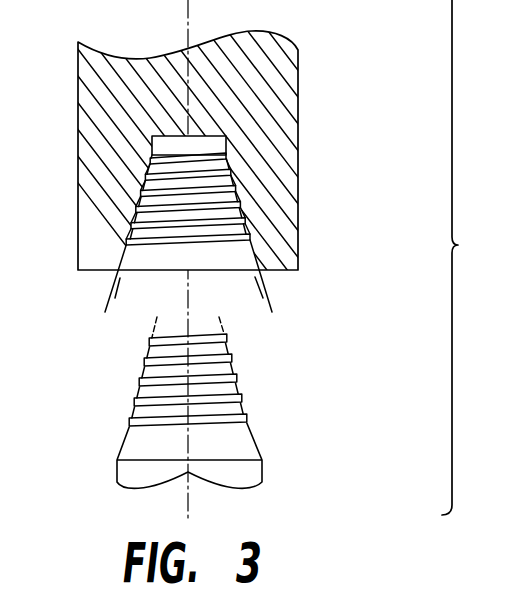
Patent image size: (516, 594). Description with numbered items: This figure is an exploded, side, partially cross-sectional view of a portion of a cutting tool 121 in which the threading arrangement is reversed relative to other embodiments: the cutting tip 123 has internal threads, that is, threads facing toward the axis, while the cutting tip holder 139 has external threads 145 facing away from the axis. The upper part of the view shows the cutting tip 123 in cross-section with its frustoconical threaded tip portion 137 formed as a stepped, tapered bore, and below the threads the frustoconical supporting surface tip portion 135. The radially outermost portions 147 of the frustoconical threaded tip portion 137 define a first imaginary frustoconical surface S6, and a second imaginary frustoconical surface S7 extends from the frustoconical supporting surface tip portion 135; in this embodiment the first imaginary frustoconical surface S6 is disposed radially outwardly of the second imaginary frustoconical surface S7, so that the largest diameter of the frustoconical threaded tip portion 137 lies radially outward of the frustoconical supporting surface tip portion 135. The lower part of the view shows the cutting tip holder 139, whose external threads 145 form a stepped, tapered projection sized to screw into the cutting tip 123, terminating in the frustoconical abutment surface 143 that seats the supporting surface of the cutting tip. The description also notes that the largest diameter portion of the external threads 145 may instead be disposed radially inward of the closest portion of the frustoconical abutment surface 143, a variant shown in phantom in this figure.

The tool 121 is at (465, 257).
The cutting tip 123 is at (315, 99).
The frustoconical supporting surface tip portion 135 is at (157, 258).
The frustoconical threaded tip portion 137 is at (248, 191).
The radially outermost portions 147 is at (250, 235).
The cutting tip holder 139 is at (202, 402).
The external threads 145 is at (163, 395).
The frustoconical abutment surface 143 is at (137, 442).
The first imaginary frustoconical surface S6 is at (270, 302).
The second imaginary frustoconical surface S7 is at (255, 288).